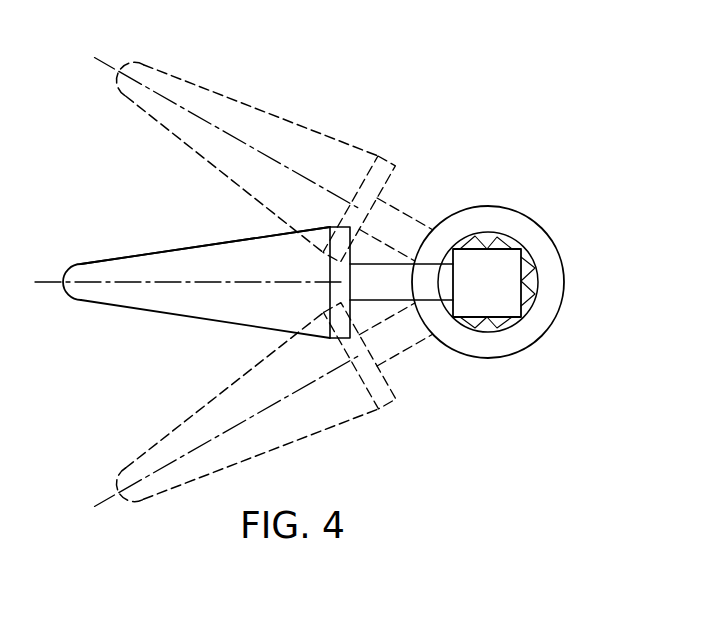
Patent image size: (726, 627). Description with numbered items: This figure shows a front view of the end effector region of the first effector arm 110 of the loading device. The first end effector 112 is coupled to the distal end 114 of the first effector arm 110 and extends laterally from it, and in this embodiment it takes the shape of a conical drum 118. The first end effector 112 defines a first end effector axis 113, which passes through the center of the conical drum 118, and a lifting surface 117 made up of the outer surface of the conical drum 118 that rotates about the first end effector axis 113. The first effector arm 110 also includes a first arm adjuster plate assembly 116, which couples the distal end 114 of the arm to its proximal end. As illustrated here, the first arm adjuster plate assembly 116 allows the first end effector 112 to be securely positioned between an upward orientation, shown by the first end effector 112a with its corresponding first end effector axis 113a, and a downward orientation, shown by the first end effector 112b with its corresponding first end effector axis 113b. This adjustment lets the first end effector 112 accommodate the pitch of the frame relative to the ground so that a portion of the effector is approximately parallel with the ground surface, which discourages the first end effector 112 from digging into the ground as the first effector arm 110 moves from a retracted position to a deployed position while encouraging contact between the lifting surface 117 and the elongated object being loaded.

The first effector arm 110 is at (552, 217).
The first end effector 112 is at (114, 318).
The first end effector in upward orientation 112a is at (245, 84).
The first end effector in downward orientation 112b is at (147, 512).
The first end effector axis 113 is at (50, 278).
The first end effector axis in upward orientation 113a is at (118, 70).
The first end effector axis in downward orientation 113b is at (106, 502).
The distal end 114 is at (522, 294).
The first arm adjuster plate assembly 116 is at (488, 206).
The lifting surface 117 is at (118, 257).
The conical drum 118 is at (176, 250).